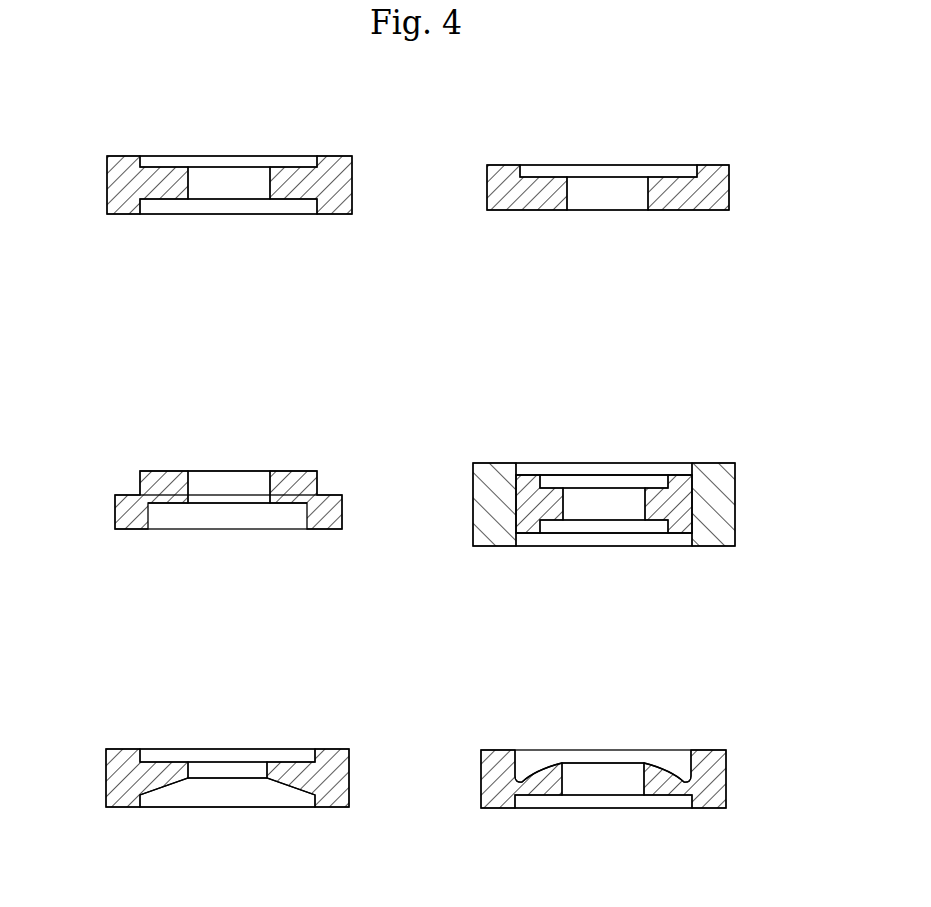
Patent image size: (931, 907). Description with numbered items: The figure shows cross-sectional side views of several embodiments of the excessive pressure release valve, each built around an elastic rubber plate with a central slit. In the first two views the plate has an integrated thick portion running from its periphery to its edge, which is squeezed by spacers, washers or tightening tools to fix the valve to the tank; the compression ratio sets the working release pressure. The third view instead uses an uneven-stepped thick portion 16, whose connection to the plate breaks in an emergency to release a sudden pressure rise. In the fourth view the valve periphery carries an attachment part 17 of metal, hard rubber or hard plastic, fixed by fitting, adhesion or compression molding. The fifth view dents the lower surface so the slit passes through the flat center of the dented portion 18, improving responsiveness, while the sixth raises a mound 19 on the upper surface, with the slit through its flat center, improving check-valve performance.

The uneven-stepped thick portion 16 is at (125, 532).
The attachment part 17 is at (708, 468).
The dented portion 18 is at (198, 778).
The mound 19 is at (575, 762).